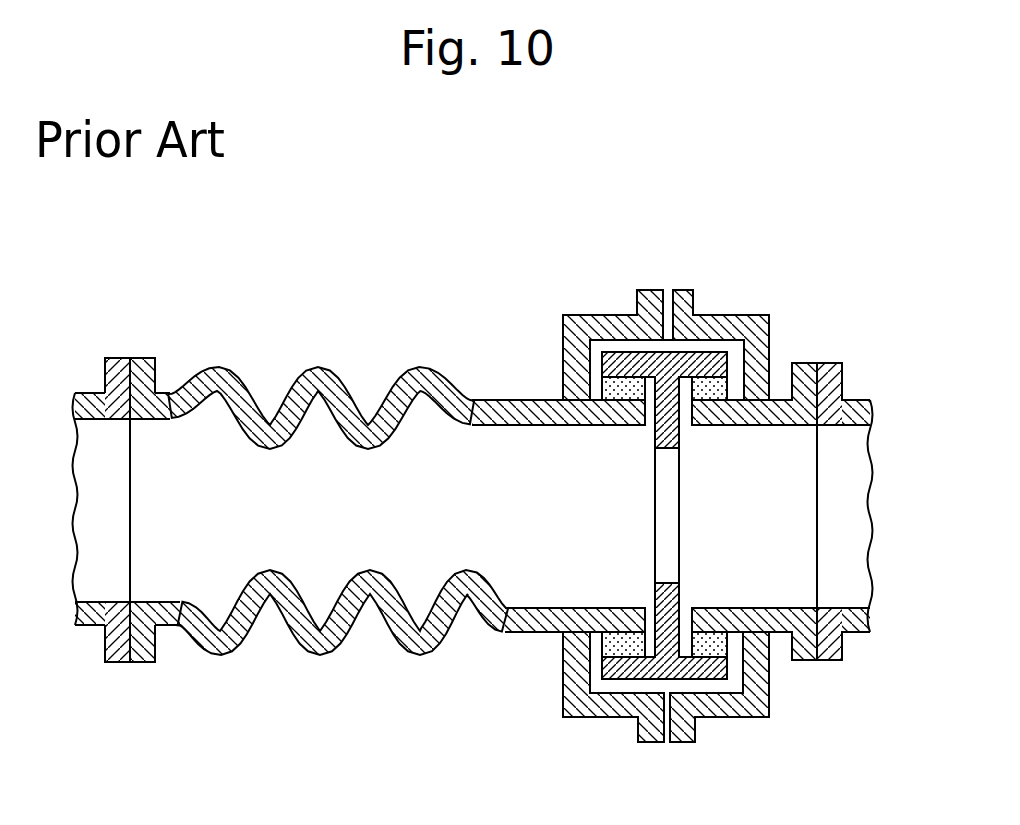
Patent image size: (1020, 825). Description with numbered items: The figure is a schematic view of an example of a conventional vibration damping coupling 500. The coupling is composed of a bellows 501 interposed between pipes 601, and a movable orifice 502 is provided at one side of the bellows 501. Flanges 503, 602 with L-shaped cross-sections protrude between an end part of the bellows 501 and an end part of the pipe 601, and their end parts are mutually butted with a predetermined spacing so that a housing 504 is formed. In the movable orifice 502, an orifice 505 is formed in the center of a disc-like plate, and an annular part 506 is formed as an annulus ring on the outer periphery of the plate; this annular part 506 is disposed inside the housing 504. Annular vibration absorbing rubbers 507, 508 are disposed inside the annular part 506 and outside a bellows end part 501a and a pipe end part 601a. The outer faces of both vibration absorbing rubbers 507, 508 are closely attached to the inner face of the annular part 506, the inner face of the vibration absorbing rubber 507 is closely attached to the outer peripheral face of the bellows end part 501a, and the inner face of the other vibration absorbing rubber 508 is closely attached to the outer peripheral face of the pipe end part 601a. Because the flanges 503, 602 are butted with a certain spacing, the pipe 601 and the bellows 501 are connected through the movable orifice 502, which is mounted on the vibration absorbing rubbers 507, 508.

The vibration damping coupling 500 is at (895, 199).
The bellows 501 is at (352, 370).
The bellows end part 501a is at (628, 413).
The movable orifice 502 is at (655, 593).
The flange 503 is at (590, 313).
The housing 504 is at (648, 352).
The orifice 505 is at (665, 513).
The annular part 506 is at (588, 348).
The vibration absorbing rubber 507 is at (602, 390).
The vibration absorbing rubber 508 is at (724, 388).
The pipe 601 is at (860, 398).
The pipe end part 601a is at (722, 427).
The flange 602 is at (747, 315).